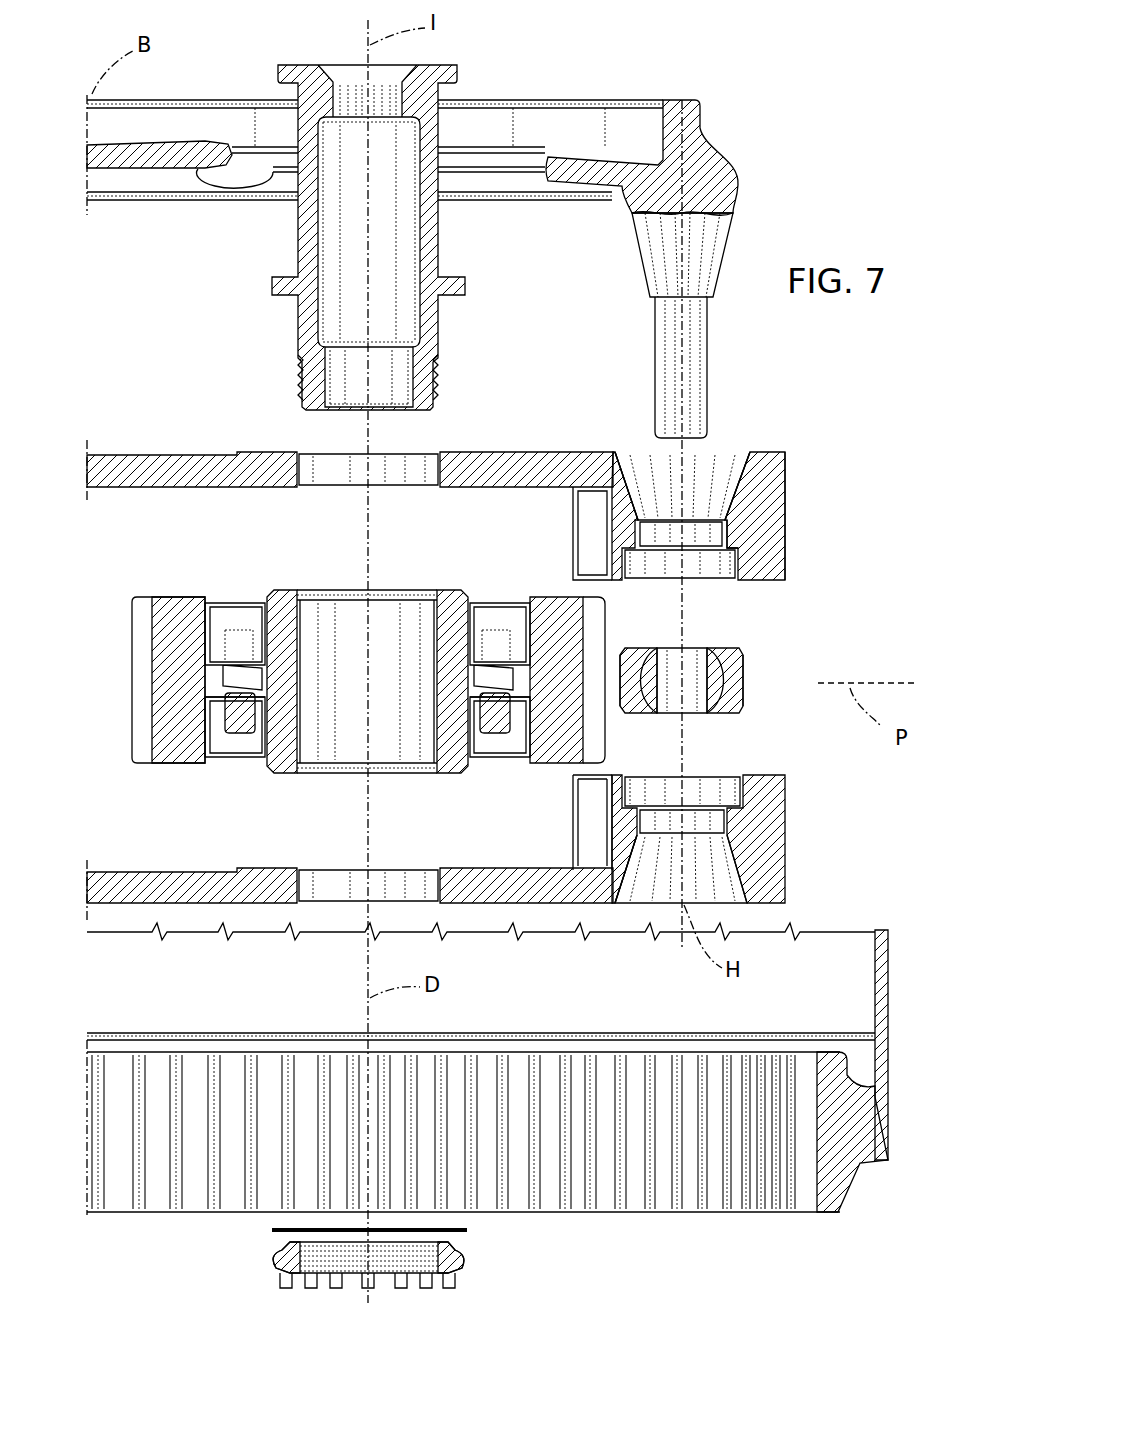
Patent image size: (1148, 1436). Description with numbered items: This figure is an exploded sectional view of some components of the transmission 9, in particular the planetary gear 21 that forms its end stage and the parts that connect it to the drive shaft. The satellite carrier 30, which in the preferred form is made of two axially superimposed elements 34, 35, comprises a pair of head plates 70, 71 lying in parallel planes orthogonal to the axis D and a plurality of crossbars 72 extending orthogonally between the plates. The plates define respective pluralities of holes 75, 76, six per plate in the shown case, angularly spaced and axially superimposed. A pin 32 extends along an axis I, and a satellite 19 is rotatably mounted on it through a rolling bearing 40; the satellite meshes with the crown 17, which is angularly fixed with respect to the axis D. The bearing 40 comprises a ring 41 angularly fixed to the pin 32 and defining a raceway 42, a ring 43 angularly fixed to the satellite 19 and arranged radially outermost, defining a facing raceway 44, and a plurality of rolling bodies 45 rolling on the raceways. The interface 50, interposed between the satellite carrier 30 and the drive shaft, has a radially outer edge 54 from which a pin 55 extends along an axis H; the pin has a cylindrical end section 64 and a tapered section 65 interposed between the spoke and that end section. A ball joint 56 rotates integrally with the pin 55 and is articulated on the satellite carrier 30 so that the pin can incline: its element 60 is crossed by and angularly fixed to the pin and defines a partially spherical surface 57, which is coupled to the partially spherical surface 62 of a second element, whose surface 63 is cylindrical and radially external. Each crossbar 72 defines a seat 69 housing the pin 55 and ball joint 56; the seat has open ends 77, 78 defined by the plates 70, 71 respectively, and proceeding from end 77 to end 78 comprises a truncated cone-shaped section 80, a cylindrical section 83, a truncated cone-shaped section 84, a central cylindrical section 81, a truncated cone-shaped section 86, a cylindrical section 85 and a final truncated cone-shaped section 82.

The transmission 9 is at (788, 120).
The crown 17 is at (842, 1142).
The satellite 19 is at (115, 650).
The planetary gear 21 is at (773, 658).
The satellite carrier 30 is at (749, 498).
The pin 32 is at (458, 376).
The element 34 is at (798, 494).
The element 35 is at (724, 849).
The rolling bearing 40 is at (341, 653).
The ring 41 is at (458, 630).
The raceway 42 is at (482, 745).
The ring 43 is at (563, 633).
The raceway 44 is at (222, 746).
The rolling bodies 45 is at (232, 620).
The interface 50 is at (700, 58).
The radially outer edge 54 is at (686, 98).
The pin 55 is at (703, 311).
The ball joint 56 is at (731, 686).
The partially spherical surface 57 is at (740, 663).
The element 60 is at (718, 705).
The partially spherical surface 62 is at (635, 675).
The surface 63 is at (750, 690).
The cylindrical end section 64 is at (700, 360).
The tapered section 65 is at (648, 265).
The seat 69 is at (724, 477).
The head plate 70 is at (350, 450).
The head plate 71 is at (438, 889).
The crossbar 72 is at (727, 498).
The holes 75 is at (305, 470).
The holes 76 is at (305, 886).
The open end 77 is at (620, 452).
The open end 78 is at (620, 900).
The truncated cone-shaped section 80 is at (632, 488).
The cylindrical section 81 is at (632, 568).
The truncated cone-shaped section 82 is at (641, 856).
The cylindrical section 83 is at (728, 530).
The truncated cone-shaped section 84 is at (730, 553).
The cylindrical section 85 is at (725, 822).
The truncated cone-shaped section 86 is at (742, 807).